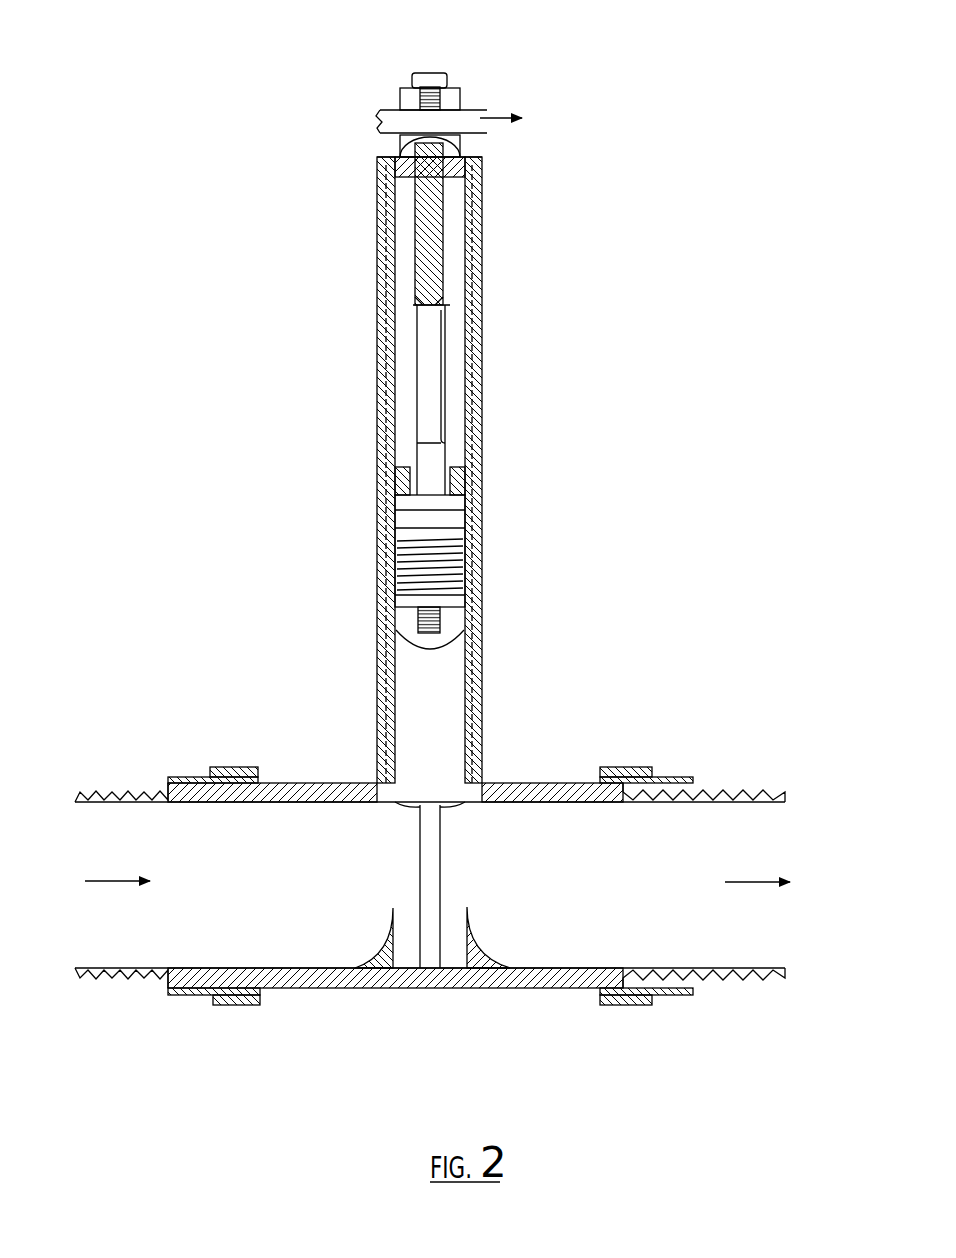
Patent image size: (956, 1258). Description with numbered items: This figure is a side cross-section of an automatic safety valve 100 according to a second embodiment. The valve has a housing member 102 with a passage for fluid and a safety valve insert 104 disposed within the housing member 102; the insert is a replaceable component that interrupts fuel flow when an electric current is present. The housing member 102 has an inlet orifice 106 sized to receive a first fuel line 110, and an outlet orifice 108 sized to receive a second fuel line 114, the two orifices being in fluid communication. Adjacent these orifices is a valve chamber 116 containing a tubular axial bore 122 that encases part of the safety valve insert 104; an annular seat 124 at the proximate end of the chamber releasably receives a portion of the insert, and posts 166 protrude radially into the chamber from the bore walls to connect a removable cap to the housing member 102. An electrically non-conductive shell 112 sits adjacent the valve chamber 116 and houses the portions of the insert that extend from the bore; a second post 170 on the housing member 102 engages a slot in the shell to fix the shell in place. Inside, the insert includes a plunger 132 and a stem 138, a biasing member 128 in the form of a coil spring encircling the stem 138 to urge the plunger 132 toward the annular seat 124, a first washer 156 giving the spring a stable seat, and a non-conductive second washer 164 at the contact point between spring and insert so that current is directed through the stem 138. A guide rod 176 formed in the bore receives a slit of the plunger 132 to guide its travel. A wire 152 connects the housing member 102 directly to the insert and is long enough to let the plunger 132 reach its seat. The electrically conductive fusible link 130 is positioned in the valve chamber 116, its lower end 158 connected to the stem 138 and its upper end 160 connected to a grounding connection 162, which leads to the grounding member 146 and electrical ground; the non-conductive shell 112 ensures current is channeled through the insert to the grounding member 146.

The automatic safety valve 100 is at (722, 364).
The housing member 102 is at (374, 538).
The safety valve insert 104 is at (376, 382).
The inlet orifice 106 is at (213, 925).
The outlet orifice 108 is at (760, 940).
The first fuel line 110 is at (185, 842).
The electrically non-conductive shell 112 is at (473, 338).
The second fuel line 114 is at (742, 833).
The valve chamber 116 is at (340, 832).
The tubular axial bore 122 is at (455, 267).
The annular seat 124 is at (477, 988).
The biasing member 128 is at (457, 558).
The electrically conductive fusible link 130 is at (477, 220).
The plunger 132 is at (443, 718).
The stem 138 is at (440, 617).
The grounding member 146 is at (467, 110).
The wire 152 is at (447, 382).
The first washer 156 is at (397, 604).
The lower end 158 is at (420, 293).
The upper end 160 is at (397, 155).
The grounding connection 162 is at (460, 79).
The second washer 164 is at (395, 585).
The posts 166 is at (470, 442).
The second post 170 is at (394, 461).
The guide rod 176 is at (430, 890).